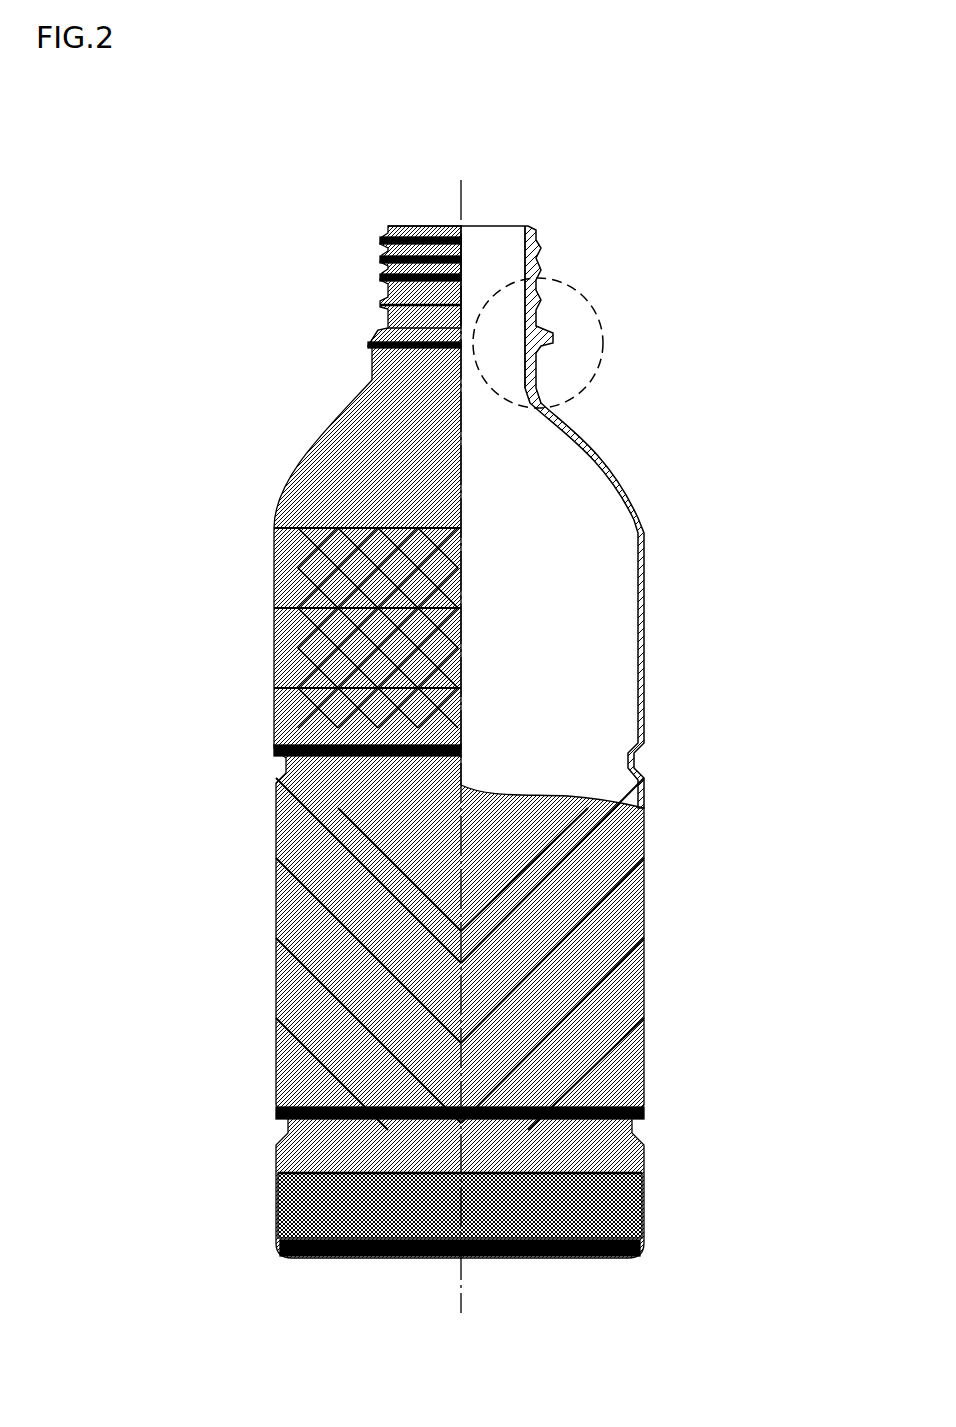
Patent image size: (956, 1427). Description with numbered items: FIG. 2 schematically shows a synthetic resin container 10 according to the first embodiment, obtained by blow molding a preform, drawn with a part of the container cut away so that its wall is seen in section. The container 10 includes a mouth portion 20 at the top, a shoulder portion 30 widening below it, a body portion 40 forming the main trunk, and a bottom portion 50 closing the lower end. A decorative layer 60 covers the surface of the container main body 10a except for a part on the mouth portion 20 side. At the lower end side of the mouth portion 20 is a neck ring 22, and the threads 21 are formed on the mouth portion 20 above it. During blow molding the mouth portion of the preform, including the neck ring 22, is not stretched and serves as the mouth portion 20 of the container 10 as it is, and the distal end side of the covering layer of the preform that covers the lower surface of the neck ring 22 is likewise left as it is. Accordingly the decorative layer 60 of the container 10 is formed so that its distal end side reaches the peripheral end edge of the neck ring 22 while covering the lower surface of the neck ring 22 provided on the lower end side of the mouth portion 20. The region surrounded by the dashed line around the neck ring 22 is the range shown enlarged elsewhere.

The container 10 is at (320, 184).
The container main body 10a is at (602, 447).
The mouth portion 20 is at (378, 312).
The screw thread 21 is at (378, 250).
The neck ring 22 is at (360, 332).
The shoulder portion 30 is at (332, 422).
The body portion 40 is at (270, 712).
The bottom portion 50 is at (373, 1250).
The decorative layer 60 is at (634, 505).